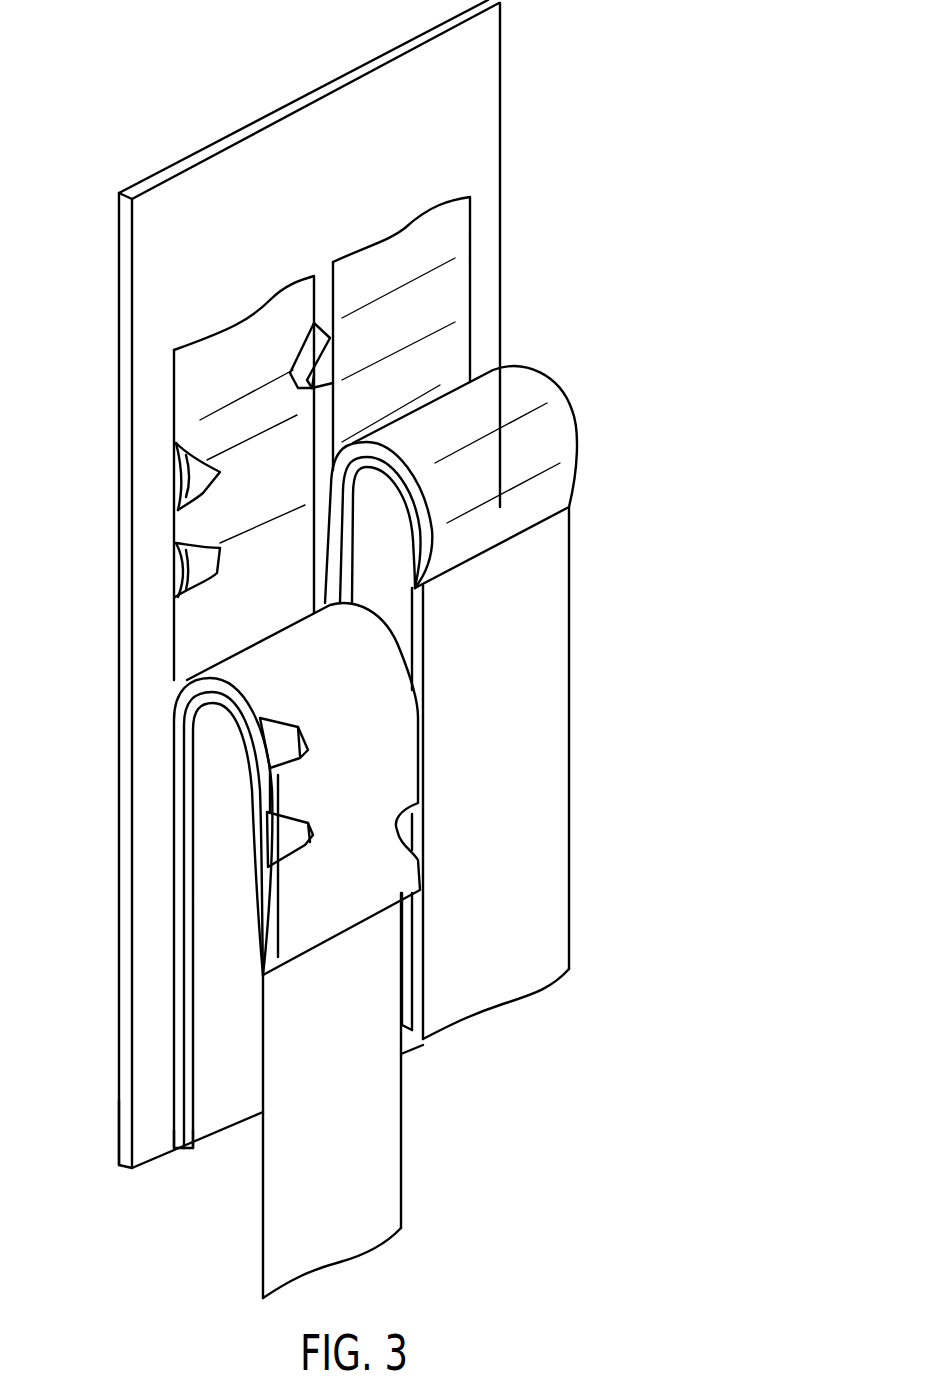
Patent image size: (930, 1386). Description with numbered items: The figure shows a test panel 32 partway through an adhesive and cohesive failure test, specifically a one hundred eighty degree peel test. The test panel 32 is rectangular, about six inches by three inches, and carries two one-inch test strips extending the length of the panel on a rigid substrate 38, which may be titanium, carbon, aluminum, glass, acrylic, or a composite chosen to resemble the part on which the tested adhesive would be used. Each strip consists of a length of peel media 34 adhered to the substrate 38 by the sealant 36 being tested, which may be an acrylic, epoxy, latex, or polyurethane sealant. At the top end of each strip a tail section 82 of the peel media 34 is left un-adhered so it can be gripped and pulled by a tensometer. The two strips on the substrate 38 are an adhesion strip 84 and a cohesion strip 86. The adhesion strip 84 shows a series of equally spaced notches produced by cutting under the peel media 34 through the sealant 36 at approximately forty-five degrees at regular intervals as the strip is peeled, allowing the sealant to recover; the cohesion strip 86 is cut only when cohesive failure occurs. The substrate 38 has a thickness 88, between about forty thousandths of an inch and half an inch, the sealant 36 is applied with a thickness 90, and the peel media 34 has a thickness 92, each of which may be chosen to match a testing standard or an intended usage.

The test panel 32 is at (630, 106).
The peel media 34 is at (397, 602).
The sealant 36 is at (540, 385).
The substrate 38 is at (140, 268).
The tail section 82 is at (497, 992).
The adhesion strip 84 is at (547, 784).
The cohesion strip 86 is at (387, 1113).
The thickness 88 is at (123, 1139).
The thickness 90 is at (168, 1148).
The thickness 92 is at (180, 1148).